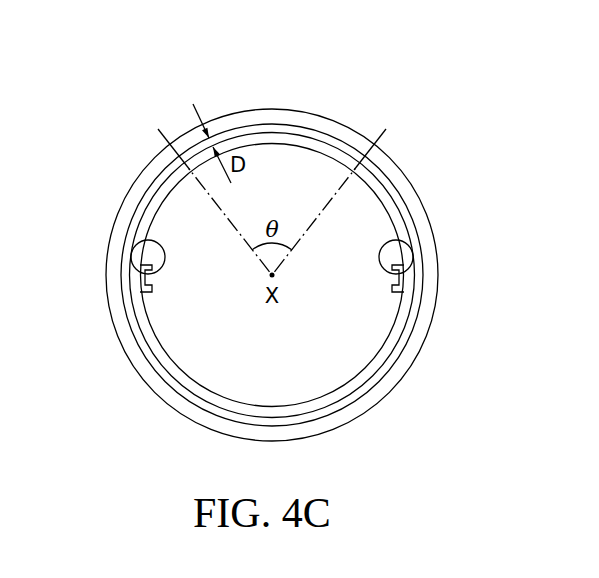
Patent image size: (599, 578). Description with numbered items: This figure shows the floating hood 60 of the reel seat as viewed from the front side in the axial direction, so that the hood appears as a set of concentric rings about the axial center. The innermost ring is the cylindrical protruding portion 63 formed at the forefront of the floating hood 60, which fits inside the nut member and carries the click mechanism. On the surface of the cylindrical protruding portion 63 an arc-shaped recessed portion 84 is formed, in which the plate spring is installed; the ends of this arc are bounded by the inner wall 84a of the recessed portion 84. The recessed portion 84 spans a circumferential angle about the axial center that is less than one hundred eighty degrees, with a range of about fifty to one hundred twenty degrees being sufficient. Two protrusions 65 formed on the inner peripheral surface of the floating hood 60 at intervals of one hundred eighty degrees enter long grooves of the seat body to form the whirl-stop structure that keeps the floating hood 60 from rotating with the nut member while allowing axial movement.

The floating hood 60 is at (301, 107).
The cylindrical protruding portion 63 is at (378, 188).
The protrusions 65 is at (133, 251).
The recessed portion 84 is at (242, 141).
The inner wall of the recessed portion 84a is at (190, 160).